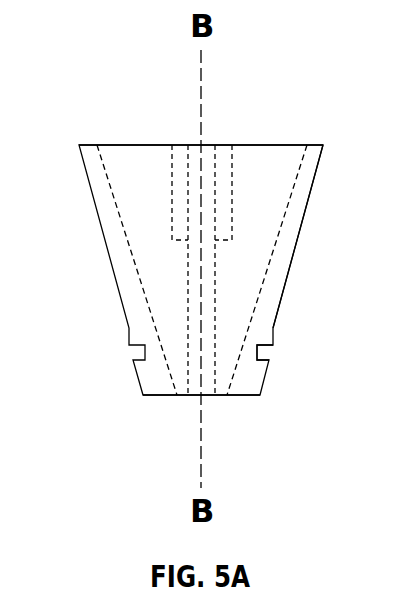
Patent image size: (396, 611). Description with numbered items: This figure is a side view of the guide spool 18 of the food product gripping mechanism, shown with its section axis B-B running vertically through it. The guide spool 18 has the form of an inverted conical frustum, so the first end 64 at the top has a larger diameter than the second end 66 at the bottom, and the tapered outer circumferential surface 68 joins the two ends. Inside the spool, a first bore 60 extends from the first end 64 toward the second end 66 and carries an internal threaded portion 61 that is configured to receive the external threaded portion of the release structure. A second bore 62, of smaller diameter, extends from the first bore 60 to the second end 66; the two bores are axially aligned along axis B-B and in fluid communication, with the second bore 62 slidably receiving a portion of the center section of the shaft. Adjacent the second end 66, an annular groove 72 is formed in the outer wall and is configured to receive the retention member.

The guide spool 18 is at (86, 112).
The first bore 60 is at (232, 162).
The internal threaded portion 61 is at (172, 160).
The second bore 62 is at (208, 396).
The first end 64 is at (134, 144).
The second end 66 is at (160, 396).
The outer circumferential surface 68 is at (299, 243).
The annular groove 72 is at (268, 353).